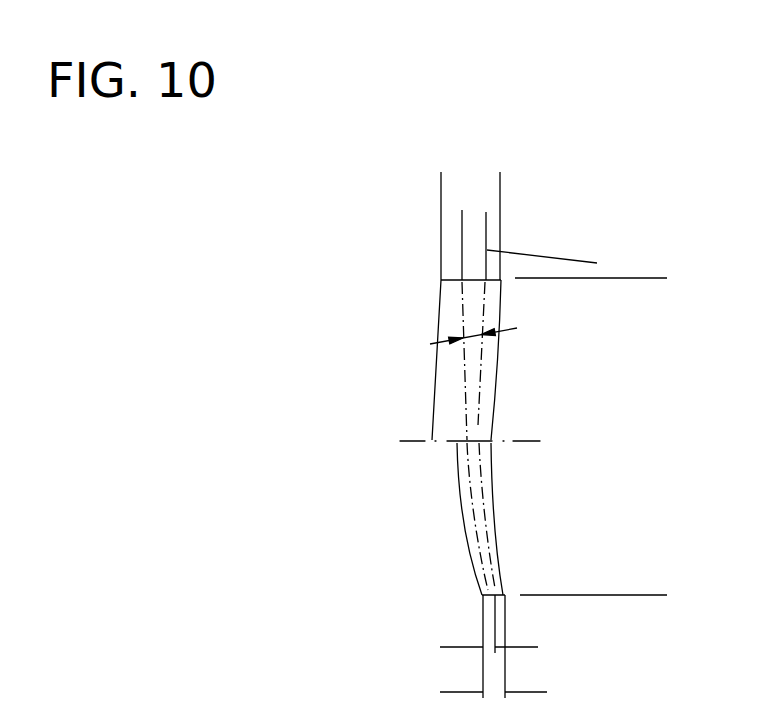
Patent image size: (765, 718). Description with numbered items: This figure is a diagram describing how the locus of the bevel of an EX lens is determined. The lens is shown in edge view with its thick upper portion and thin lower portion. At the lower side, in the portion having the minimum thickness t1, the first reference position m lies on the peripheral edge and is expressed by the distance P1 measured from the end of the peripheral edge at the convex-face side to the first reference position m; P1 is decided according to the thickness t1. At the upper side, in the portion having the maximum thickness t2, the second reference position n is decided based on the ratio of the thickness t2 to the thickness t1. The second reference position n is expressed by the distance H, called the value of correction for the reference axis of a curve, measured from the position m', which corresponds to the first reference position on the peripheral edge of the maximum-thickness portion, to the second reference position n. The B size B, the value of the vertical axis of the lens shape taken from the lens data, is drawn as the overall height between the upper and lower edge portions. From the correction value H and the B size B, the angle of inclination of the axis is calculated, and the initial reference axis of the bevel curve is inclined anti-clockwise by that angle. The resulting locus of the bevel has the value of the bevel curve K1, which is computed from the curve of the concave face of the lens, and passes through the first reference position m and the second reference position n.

The thickness of the portion having the maximum thickness t2 is at (500, 183).
The value of correction for the reference axis of a curve H is at (417, 222).
The bevel curve K1 is at (545, 249).
The second reference position n is at (461, 278).
The position corresponding to the first reference position m' is at (528, 435).
The B size B is at (646, 278).
The first reference position m is at (534, 624).
The distance from the end of the peripheral edge at the convex face side to the firs P1 is at (481, 633).
The thickness of the portion having the minimum thickness t1 is at (500, 678).